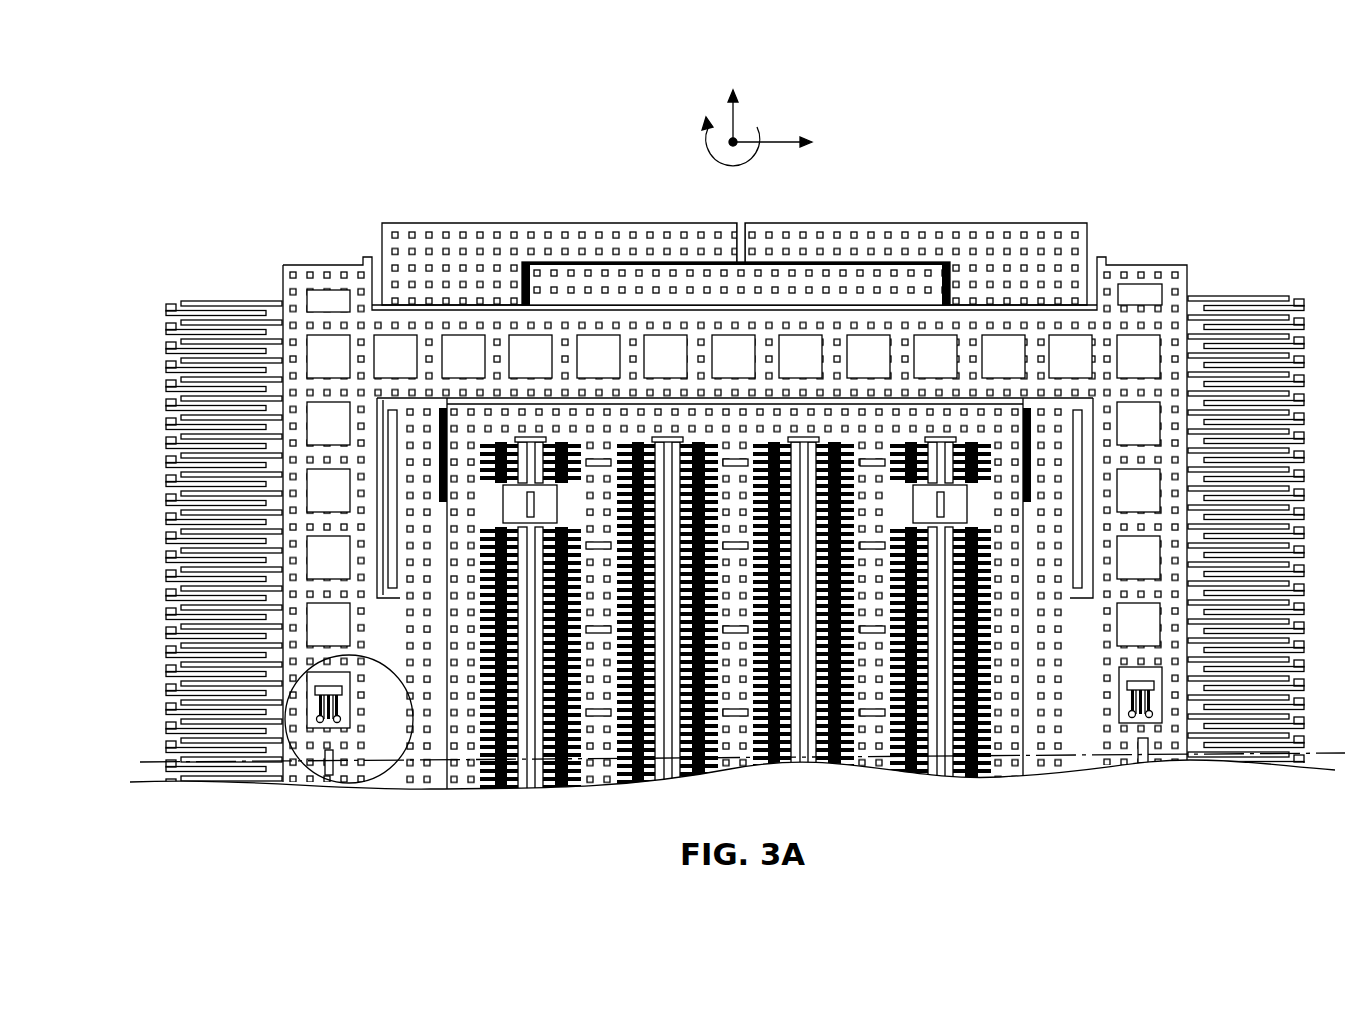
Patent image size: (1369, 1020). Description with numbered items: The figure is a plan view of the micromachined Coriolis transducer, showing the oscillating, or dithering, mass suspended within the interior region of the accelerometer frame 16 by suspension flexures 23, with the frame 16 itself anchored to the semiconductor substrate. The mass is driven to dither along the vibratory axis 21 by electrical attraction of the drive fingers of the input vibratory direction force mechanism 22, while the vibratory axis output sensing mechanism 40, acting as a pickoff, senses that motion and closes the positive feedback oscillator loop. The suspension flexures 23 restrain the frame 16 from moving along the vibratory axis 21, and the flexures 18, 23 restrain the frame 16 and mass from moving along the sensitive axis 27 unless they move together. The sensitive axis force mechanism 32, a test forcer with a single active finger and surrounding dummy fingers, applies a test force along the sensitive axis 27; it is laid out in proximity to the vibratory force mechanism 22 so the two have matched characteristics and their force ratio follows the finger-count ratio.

The accelerometer frame 16 is at (322, 292).
The flexures 18 is at (385, 460).
The vibratory axis 21 is at (785, 145).
The input vibratory direction force mechanism 22 is at (488, 455).
The suspension flexures 23 is at (681, 214).
The sensitive axis 27 is at (783, 102).
The sensitive axis force mechanism 32 is at (256, 700).
The vibratory axis output sensing mechanism 40 is at (530, 440).